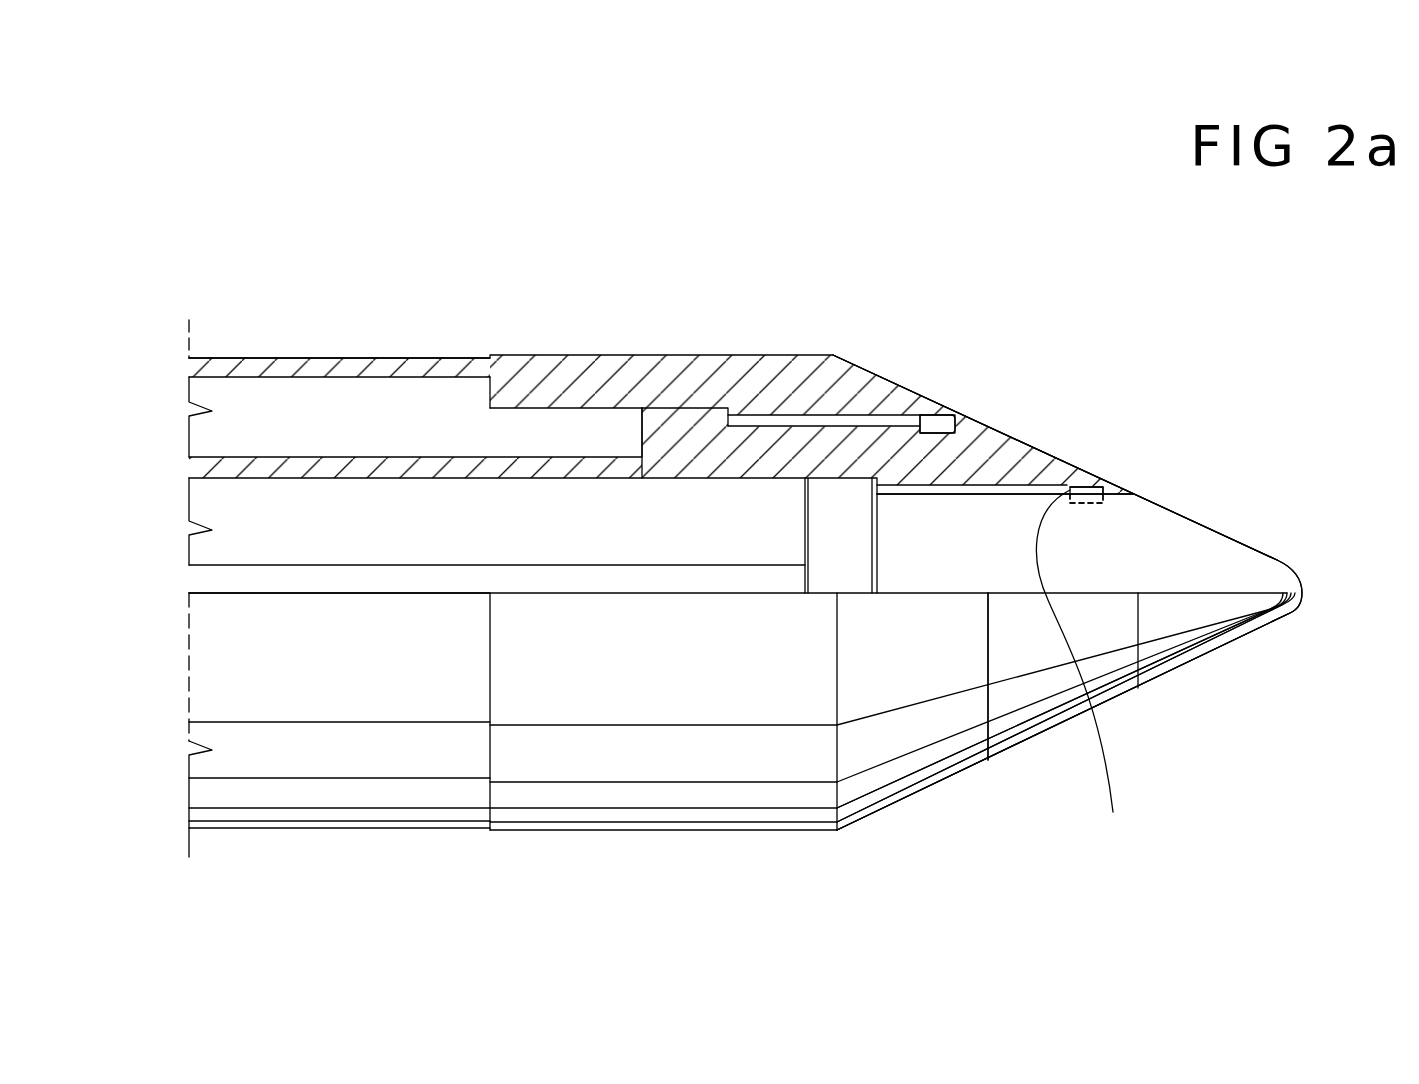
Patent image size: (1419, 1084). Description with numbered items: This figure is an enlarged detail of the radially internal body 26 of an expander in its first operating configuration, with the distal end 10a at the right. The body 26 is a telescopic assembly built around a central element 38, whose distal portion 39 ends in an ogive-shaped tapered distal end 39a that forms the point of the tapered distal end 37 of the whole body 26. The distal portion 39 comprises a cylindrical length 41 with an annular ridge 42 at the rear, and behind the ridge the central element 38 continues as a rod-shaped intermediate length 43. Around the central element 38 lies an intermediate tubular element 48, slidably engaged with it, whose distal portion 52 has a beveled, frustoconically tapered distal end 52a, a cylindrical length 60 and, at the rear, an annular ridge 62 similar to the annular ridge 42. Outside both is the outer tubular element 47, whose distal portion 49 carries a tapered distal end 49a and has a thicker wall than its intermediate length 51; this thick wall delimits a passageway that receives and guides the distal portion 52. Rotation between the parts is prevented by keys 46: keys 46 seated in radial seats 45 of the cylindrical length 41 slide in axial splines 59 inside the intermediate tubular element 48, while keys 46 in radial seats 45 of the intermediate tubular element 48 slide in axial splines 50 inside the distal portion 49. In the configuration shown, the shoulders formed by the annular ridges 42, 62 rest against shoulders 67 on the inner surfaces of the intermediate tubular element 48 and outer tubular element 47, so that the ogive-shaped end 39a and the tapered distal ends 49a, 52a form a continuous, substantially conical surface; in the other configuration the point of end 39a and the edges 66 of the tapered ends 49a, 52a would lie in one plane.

The radially internal body 26 is at (508, 213).
The outer tubular element 47 is at (316, 355).
The intermediate length 51 is at (375, 358).
The intermediate tubular element 48 is at (245, 442).
The intermediate length 43 is at (433, 563).
The distal portion 49 is at (578, 342).
The annular ridge 62 is at (667, 432).
The cylindrical length 60 is at (755, 417).
The axial splines 50 is at (817, 418).
The tapered distal end 49a is at (940, 414).
The keys 46 is at (955, 436).
The edges 66 is at (957, 418).
The radial seats 45 is at (927, 458).
The distal portion 52 is at (1062, 458).
The distal end 52a is at (1075, 468).
The distal portion 39 is at (1136, 569).
The central element 38 is at (357, 549).
The annular ridge 42 is at (841, 535).
The cylindrical length 41 is at (1007, 627).
The axial splines 59 is at (942, 488).
The distal ends 10a is at (1153, 724).
The tapered distal end 39a is at (1180, 660).
The tapered distal end 37 is at (1246, 656).
The shoulders 67 is at (757, 456).